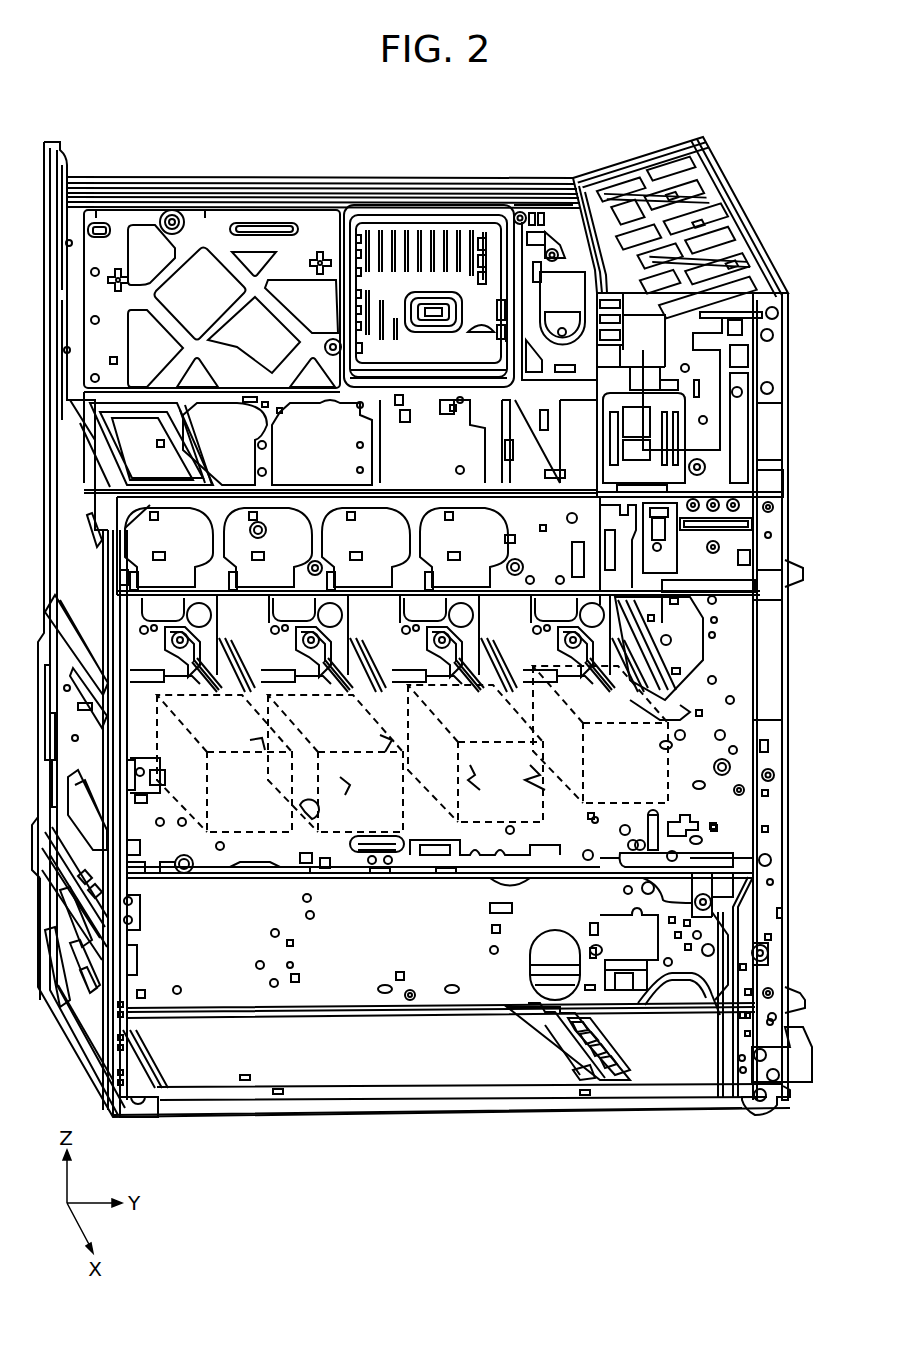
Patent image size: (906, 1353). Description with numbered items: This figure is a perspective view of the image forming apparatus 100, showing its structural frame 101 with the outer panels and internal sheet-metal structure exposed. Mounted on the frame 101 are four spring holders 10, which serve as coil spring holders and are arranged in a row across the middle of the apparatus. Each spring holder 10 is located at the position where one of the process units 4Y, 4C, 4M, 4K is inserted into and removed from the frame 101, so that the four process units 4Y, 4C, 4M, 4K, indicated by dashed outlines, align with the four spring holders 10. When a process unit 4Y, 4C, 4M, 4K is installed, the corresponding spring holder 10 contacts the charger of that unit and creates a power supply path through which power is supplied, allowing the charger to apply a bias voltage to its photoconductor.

The image forming apparatus 100 is at (386, 141).
The frame 101 is at (790, 367).
The spring holder 10 is at (182, 658).
The process unit 4Y is at (236, 734).
The process unit 4C is at (349, 734).
The process unit 4M is at (488, 724).
The process unit 4K is at (614, 706).